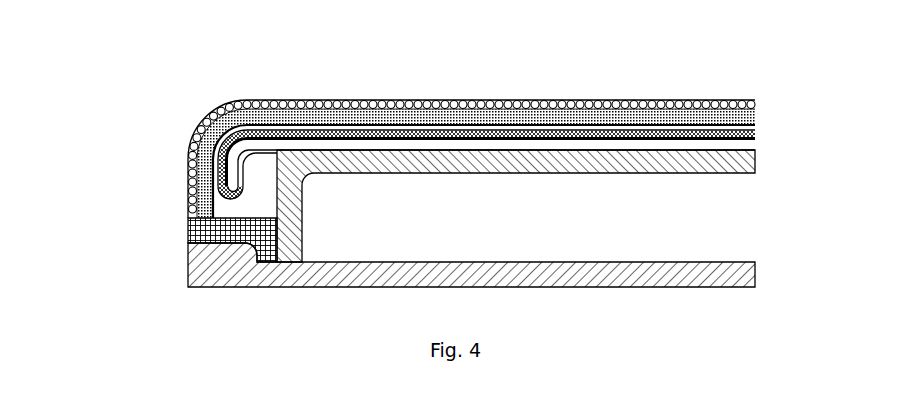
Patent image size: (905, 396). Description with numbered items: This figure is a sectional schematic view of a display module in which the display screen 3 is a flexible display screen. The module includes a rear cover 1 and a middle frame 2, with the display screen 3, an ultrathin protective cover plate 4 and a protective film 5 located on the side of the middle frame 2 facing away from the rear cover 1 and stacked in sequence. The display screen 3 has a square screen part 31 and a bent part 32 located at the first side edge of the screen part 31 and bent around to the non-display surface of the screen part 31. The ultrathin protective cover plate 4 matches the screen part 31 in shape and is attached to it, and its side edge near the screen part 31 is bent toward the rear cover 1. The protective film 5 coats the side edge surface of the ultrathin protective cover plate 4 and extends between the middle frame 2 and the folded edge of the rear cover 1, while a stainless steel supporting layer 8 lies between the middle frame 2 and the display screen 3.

The rear cover 1 is at (195, 262).
The middle frame 2 is at (752, 173).
The display screen 3 is at (529, 120).
The screen part 31 is at (751, 127).
The bent part 32 is at (695, 142).
The ultrathin protective cover plate 4 is at (292, 118).
The protective film 5 is at (195, 228).
The stainless steel supporting layer 8 is at (757, 140).